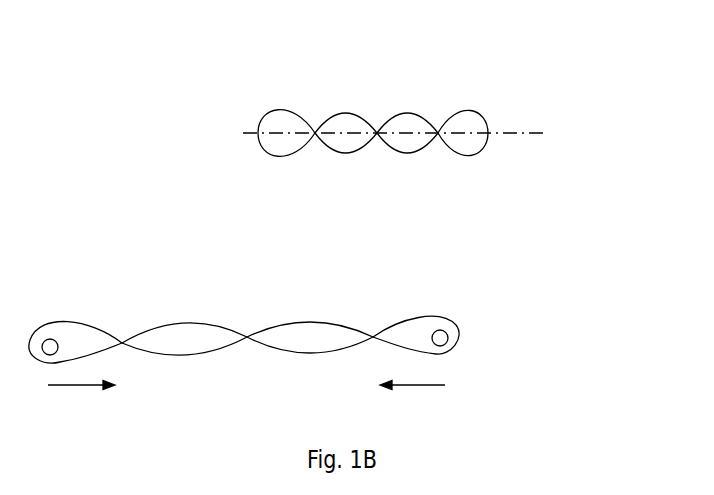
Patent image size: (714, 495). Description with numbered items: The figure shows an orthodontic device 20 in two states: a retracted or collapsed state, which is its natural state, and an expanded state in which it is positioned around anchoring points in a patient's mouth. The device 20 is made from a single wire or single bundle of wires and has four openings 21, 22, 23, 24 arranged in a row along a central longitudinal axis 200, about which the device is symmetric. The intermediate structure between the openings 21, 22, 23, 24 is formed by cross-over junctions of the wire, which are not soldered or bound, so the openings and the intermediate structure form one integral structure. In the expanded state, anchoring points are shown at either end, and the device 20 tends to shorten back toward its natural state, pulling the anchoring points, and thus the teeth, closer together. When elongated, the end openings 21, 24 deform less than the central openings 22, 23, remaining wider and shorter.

The orthodontic device 20 is at (468, 68).
The central longitudinal axis 200 is at (530, 135).
The opening 21 is at (275, 113).
The opening 22 is at (350, 112).
The opening 23 is at (410, 112).
The opening 24 is at (488, 128).